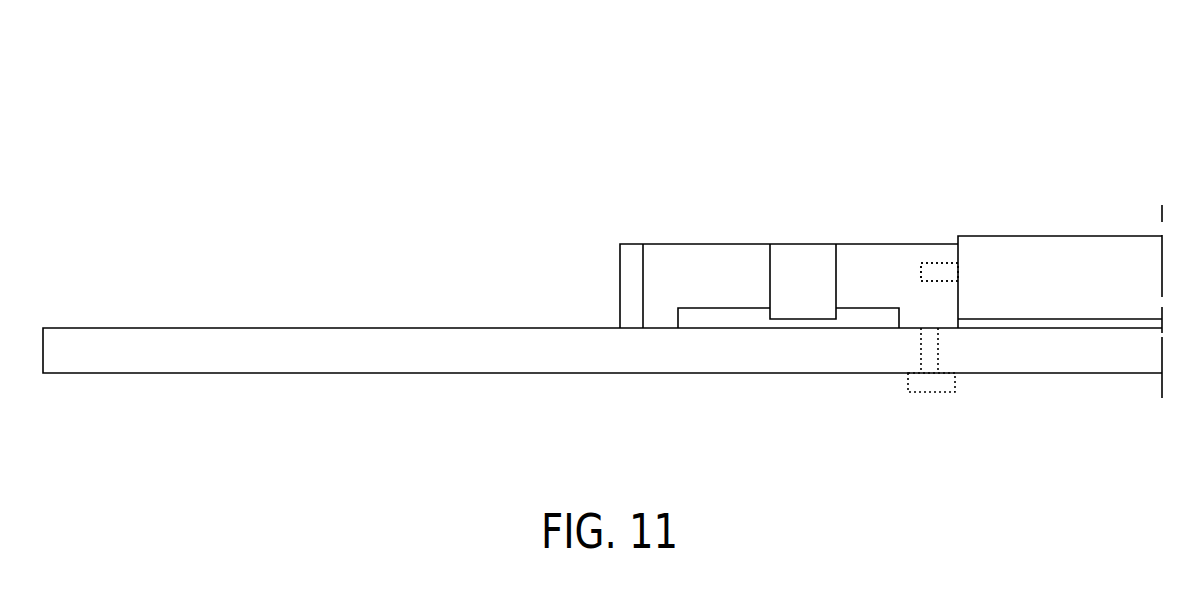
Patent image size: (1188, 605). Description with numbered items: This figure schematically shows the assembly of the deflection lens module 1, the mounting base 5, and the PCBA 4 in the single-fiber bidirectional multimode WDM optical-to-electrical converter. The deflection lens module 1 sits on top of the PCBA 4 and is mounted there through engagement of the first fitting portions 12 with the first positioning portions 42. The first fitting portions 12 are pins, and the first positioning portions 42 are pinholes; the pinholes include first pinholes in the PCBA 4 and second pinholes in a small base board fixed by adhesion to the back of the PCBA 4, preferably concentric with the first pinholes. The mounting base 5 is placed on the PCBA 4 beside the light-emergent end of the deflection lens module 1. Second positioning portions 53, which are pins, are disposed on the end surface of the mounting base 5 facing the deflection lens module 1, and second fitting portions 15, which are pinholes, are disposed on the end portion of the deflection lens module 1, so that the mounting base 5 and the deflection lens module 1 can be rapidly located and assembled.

The PCBA 4 is at (393, 343).
The deflection lens module 1 is at (700, 265).
The second fitting portions 15 is at (924, 265).
The second positioning portions 53 is at (939, 272).
The mounting base 5 is at (1133, 263).
The first fitting portions 12 is at (938, 343).
The first positioning portions 42 is at (918, 383).